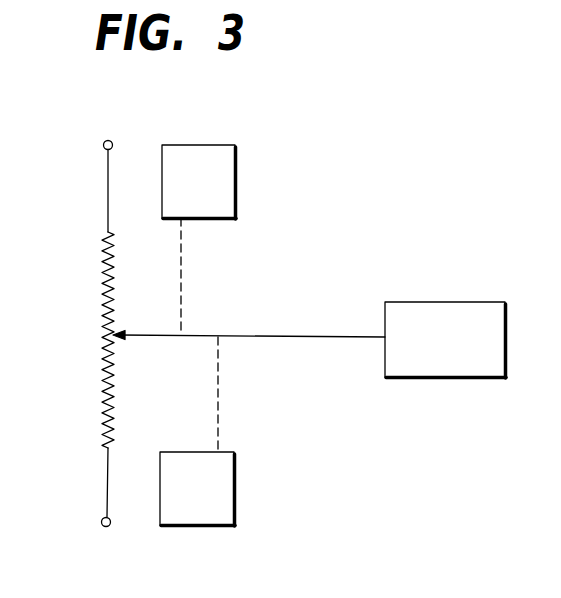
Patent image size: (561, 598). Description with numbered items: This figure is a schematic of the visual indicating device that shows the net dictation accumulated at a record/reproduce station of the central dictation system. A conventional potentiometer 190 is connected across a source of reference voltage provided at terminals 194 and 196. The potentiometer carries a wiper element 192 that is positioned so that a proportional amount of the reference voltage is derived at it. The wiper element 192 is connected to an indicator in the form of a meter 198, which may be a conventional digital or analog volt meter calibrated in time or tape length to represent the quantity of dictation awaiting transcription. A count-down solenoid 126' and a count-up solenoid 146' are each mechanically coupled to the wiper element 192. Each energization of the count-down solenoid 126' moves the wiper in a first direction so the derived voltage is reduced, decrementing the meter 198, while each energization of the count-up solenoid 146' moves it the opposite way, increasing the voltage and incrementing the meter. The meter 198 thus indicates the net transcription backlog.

The potentiometer 190 is at (105, 308).
The wiper element 192 is at (116, 340).
The terminal 194 is at (104, 143).
The terminal 196 is at (102, 524).
The count-up solenoid 146' is at (214, 214).
The count-down solenoid 126' is at (203, 452).
The meter 198 is at (443, 378).